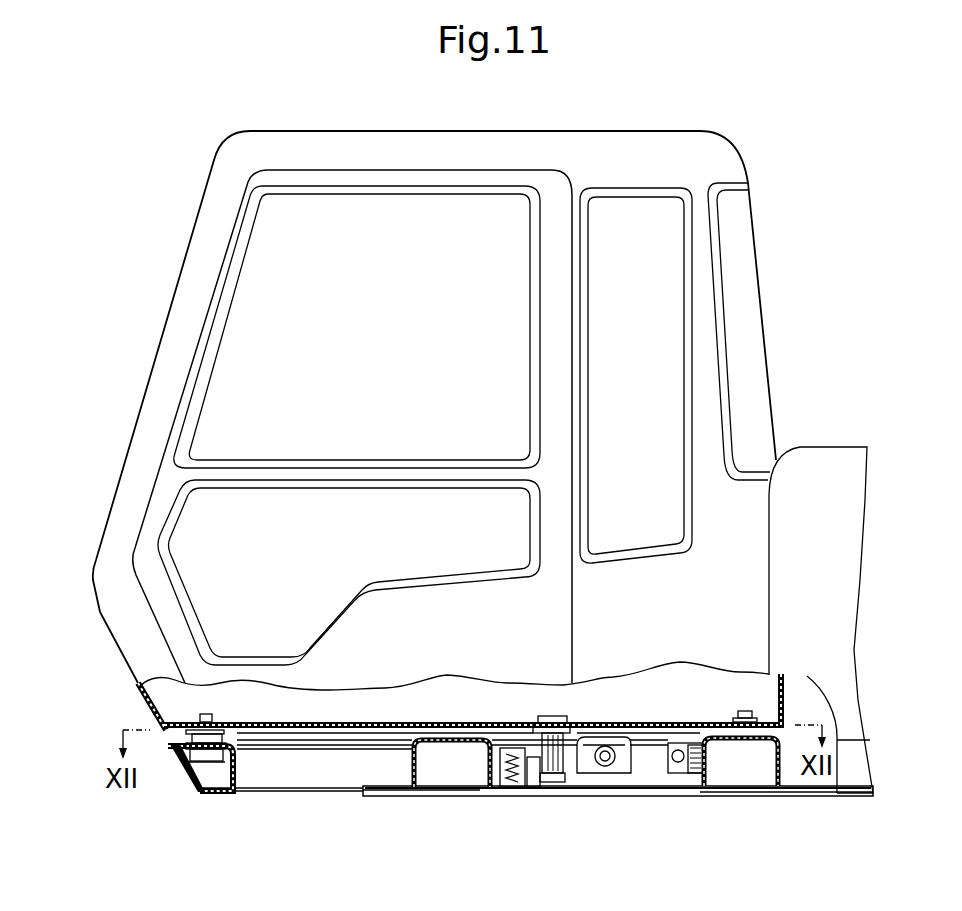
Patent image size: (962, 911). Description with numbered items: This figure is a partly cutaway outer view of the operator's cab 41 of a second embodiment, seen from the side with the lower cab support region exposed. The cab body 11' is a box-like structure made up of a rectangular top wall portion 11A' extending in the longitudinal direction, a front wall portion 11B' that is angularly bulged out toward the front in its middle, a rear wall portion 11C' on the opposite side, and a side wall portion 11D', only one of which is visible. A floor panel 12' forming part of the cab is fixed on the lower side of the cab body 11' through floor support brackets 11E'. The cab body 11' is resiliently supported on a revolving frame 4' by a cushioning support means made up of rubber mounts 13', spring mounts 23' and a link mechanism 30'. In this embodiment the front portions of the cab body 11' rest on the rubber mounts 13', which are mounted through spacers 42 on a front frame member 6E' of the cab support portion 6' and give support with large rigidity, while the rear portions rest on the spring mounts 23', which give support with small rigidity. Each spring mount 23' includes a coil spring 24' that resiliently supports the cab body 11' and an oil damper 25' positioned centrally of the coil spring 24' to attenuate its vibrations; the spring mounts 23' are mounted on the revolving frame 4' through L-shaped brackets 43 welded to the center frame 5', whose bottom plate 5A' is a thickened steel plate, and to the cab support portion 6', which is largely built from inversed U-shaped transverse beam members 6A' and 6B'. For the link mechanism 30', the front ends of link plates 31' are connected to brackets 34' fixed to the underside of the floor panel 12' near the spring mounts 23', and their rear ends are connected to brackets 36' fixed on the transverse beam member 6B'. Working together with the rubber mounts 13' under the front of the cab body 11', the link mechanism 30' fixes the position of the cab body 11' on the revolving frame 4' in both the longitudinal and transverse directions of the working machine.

The cab body 11' is at (429, 407).
The top wall portion 11A' is at (352, 376).
The front wall portion 11B' is at (102, 684).
The rear wall portion 11C' is at (859, 685).
The side wall portion 11D' is at (778, 331).
The floor support bracket 11E' is at (485, 707).
The operator's cab 41 is at (802, 422).
The spacer 42 is at (170, 741).
The rubber mount 13' is at (187, 812).
The front frame member 6E' is at (207, 813).
The cab support portion 6' is at (281, 844).
The floor panel 12' is at (468, 794).
The revolving frame 4' is at (612, 842).
The bottom plate 5A' is at (421, 833).
The transverse beam member 6A' is at (452, 794).
The L-shaped bracket 43 is at (512, 787).
The coil spring 24' is at (520, 818).
The oil damper 25' is at (552, 781).
The spring mount 23' is at (573, 824).
The bracket 34' is at (609, 791).
The link mechanism 30' is at (665, 811).
The link plate 31' is at (672, 798).
The bracket 36' is at (708, 812).
The transverse beam member 6B' is at (743, 778).
The center frame 5' is at (786, 839).